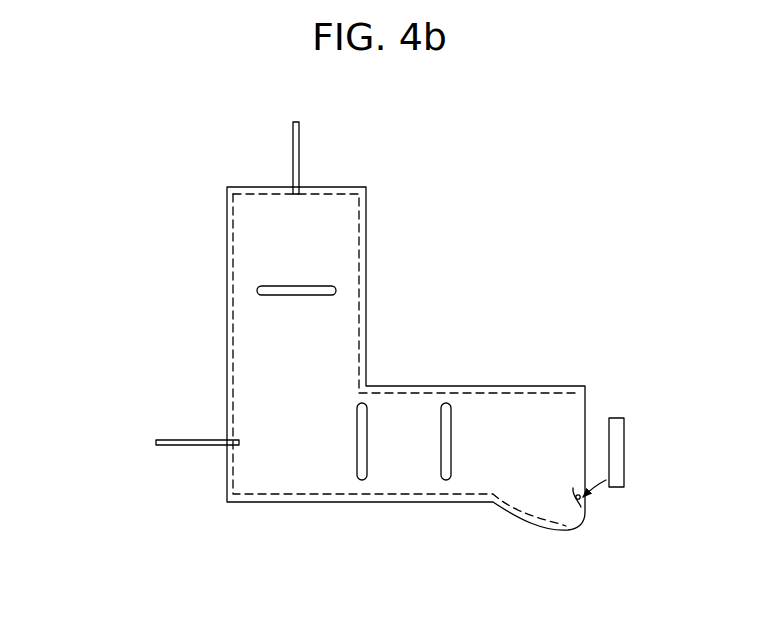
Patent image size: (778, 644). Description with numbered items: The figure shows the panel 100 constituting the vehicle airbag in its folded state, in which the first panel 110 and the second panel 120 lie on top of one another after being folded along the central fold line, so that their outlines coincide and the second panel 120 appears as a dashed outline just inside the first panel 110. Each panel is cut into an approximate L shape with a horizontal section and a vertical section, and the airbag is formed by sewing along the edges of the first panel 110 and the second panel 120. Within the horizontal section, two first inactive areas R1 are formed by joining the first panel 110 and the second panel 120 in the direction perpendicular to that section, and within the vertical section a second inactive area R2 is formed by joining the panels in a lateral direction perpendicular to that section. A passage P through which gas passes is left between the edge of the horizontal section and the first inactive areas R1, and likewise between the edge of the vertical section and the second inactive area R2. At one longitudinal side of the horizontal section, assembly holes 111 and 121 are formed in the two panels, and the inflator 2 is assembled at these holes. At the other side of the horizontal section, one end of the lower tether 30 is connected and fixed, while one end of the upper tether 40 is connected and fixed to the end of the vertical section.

The panel 100 is at (184, 107).
The first panel 110 is at (345, 358).
The second panel 120 is at (220, 327).
The upper tether 40 is at (293, 135).
The lower tether 30 is at (172, 447).
The second inactive area R2 is at (275, 285).
The first inactive area R1 is at (440, 418).
The passage P is at (342, 290).
The inflator 2 is at (625, 452).
The assembly hole 111 is at (567, 554).
The assembly hole 121 is at (575, 497).